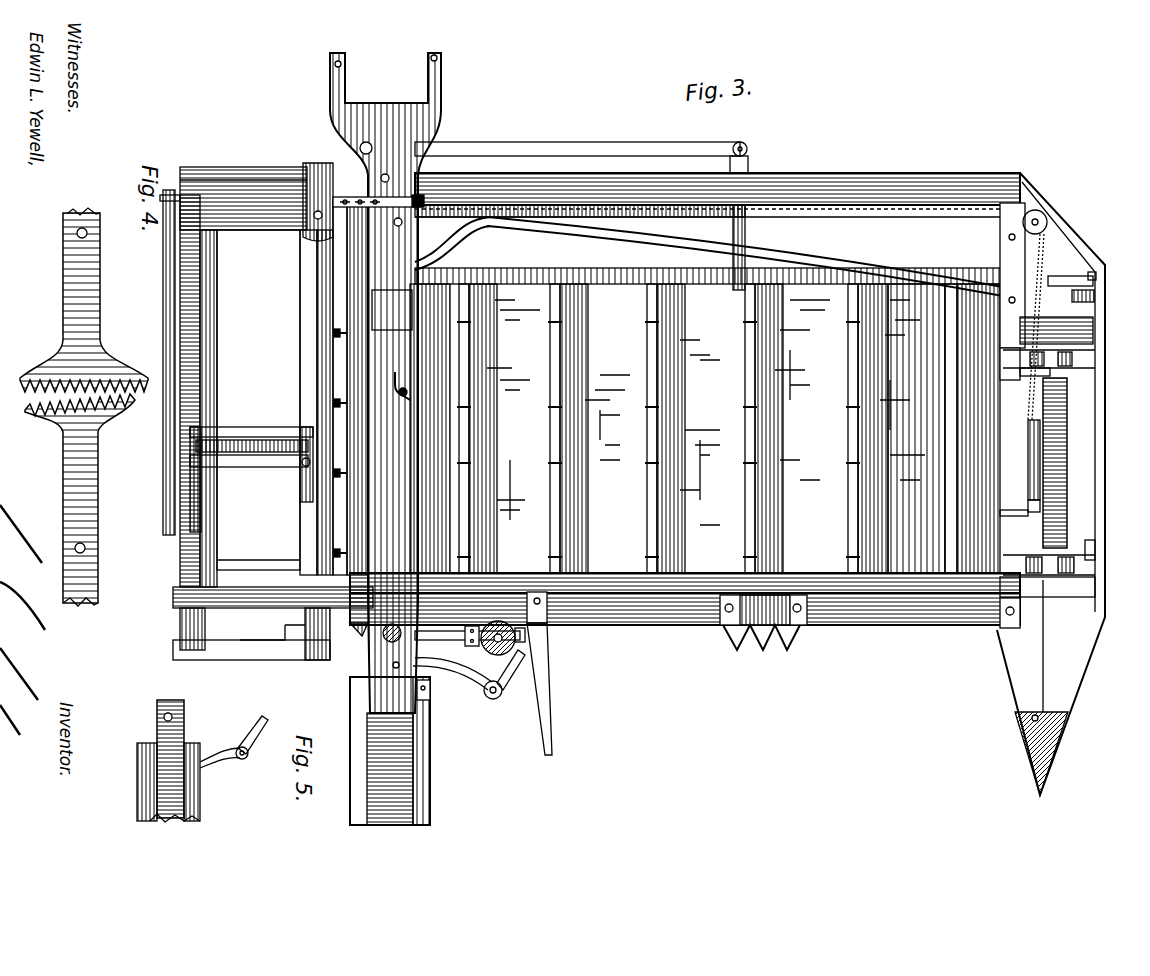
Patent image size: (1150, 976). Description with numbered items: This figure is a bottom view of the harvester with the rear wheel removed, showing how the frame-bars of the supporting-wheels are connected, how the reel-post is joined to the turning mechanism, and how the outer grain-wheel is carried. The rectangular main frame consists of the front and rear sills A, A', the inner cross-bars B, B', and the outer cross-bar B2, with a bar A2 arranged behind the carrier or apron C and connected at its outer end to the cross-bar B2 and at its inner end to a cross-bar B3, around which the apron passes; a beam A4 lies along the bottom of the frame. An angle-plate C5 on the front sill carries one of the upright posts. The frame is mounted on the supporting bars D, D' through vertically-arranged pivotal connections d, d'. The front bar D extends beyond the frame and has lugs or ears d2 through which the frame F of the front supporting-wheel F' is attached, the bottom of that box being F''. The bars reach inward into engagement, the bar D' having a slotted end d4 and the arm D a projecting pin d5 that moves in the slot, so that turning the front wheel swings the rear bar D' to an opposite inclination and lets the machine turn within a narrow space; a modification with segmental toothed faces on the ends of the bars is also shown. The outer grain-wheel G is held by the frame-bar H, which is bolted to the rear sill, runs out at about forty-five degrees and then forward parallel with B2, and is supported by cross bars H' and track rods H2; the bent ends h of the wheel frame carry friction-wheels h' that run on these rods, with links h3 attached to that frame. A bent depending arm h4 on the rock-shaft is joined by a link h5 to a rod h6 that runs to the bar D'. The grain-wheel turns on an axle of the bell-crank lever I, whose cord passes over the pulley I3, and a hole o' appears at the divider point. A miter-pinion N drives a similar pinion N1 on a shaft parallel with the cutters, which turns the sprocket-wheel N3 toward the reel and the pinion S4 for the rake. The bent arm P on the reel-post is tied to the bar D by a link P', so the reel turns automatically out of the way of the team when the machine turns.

In FIG. 3, the front sill A is at (685, 583).
In FIG. 3, the rear sill A' is at (717, 179).
In FIG. 3, the bar behind carrier A2 is at (613, 272).
In FIG. 3, the lower frame beam A4 is at (685, 621).
In FIG. 3, the inner cross-bar B is at (266, 413).
In FIG. 3, the inner cross-bar B' is at (265, 382).
In FIG. 3, the outer cross-bar B2 is at (990, 238).
In FIG. 3, the cross-bar B3 is at (440, 240).
In FIG. 3, the carrier or apron C is at (705, 428).
In FIG. 3, the angle-plate C5 is at (523, 666).
In FIG. 3, the front wheel-supporting bar D is at (372, 383).
In FIG. 5, the front wheel-supporting bar D is at (180, 759).
In FIG. 3, the rear wheel-supporting bar D' is at (392, 310).
In FIG. 4, the pivotal connection d is at (84, 585).
In FIG. 3, the pivotal connection d' is at (390, 646).
In FIG. 4, the pivotal connection d' is at (87, 236).
In FIG. 4, the lugs or ears d2 is at (84, 408).
In FIG. 3, the slotted end d4 is at (406, 396).
In FIG. 3, the projecting pin d5 is at (412, 384).
In FIG. 3, the front-wheel frame F is at (374, 751).
In FIG. 5, the front-wheel frame F is at (168, 782).
In FIG. 3, the front supporting-wheel F' is at (412, 769).
In FIG. 3, the box bottom F'' is at (414, 813).
In FIG. 5, the box bottom F'' is at (175, 825).
In FIG. 3, the outer grain-wheel G is at (1068, 425).
In FIG. 3, the grain-wheel frame-bar H is at (1052, 484).
In FIG. 3, the cross rods or bars H' is at (1047, 472).
In FIG. 3, the track rods H2 is at (1120, 556).
In FIG. 3, the bent ends of frame H3 h is at (1049, 462).
In FIG. 3, the friction-wheels h' is at (1068, 463).
In FIG. 3, the links h3 is at (1025, 500).
In FIG. 3, the bent depending arm h4 is at (1096, 296).
In FIG. 3, the link h5 is at (1072, 272).
In FIG. 3, the rod h6 is at (745, 256).
In FIG. 3, the bell-crank lever I is at (1026, 442).
In FIG. 3, the pulley I3 is at (422, 198).
In FIG. 3, the miter-pinion N is at (358, 636).
In FIG. 3, the miter-pinion N1 is at (462, 641).
In FIG. 3, the sprocket-wheel N3 is at (470, 664).
In FIG. 3, the hole o' is at (1042, 719).
In FIG. 3, the bent arm P is at (511, 688).
In FIG. 5, the bent arm P is at (262, 732).
In FIG. 3, the link P' is at (486, 703).
In FIG. 5, the link P' is at (224, 746).
In FIG. 3, the pinion S4 is at (450, 682).